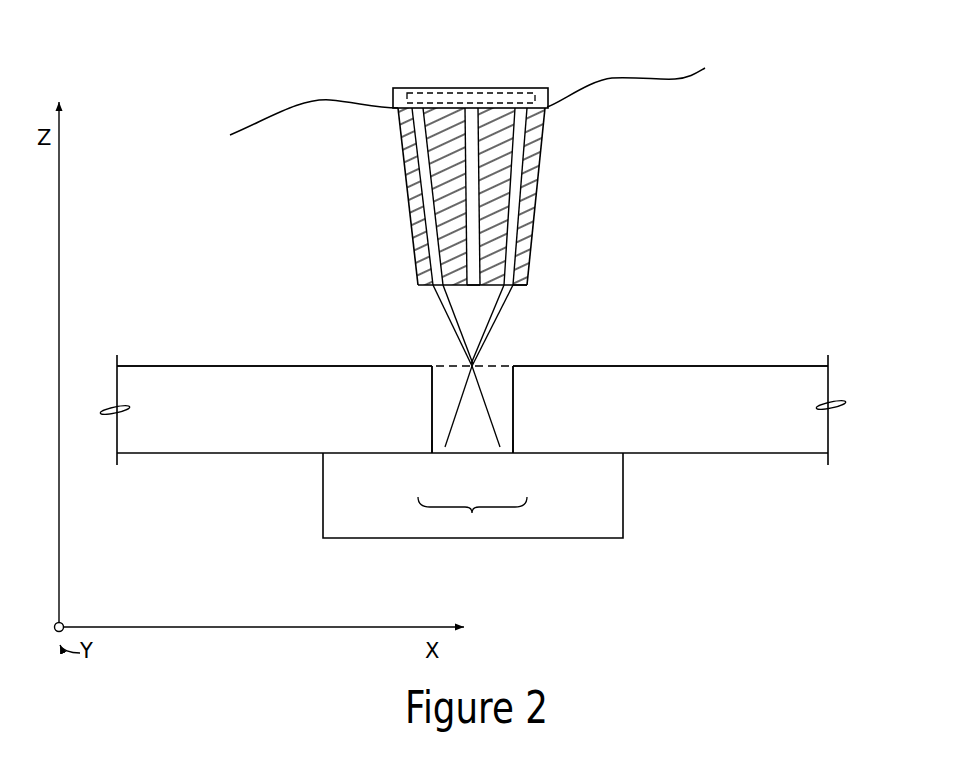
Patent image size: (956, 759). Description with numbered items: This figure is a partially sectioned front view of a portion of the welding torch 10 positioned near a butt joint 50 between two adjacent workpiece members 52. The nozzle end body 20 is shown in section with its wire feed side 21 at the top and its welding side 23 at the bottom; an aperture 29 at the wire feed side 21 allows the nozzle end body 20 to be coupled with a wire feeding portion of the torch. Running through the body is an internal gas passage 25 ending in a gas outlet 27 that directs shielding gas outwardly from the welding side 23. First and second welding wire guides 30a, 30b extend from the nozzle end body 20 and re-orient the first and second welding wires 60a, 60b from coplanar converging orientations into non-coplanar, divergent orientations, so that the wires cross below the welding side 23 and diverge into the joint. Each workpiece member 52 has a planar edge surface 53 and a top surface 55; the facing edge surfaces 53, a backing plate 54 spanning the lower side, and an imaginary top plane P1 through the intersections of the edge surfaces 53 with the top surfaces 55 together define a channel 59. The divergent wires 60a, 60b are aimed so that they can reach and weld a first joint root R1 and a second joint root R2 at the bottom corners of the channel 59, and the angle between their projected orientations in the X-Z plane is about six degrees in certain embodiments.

The welding torch 10 is at (216, 237).
The nozzle end body 20 is at (500, 168).
The wire feed side 21 is at (397, 80).
The aperture 29 is at (513, 82).
The internal gas passage 25 is at (476, 146).
The gas outlet 27 is at (472, 300).
The welding side 23 is at (534, 290).
The first welding wire 60a is at (411, 178).
The second welding wire 60b is at (513, 240).
The first welding wire guide 30a is at (458, 345).
The second welding wire guide 30b is at (505, 310).
The top plane P1 is at (490, 350).
The workpiece members 52 is at (212, 442).
The top surfaces 55 is at (260, 356).
The edge surface 53 is at (446, 392).
The channel 59 is at (455, 442).
The butt joint 50 is at (472, 516).
The backing plate 54 is at (615, 494).
The first joint root R1 is at (519, 457).
The second joint root R2 is at (426, 457).